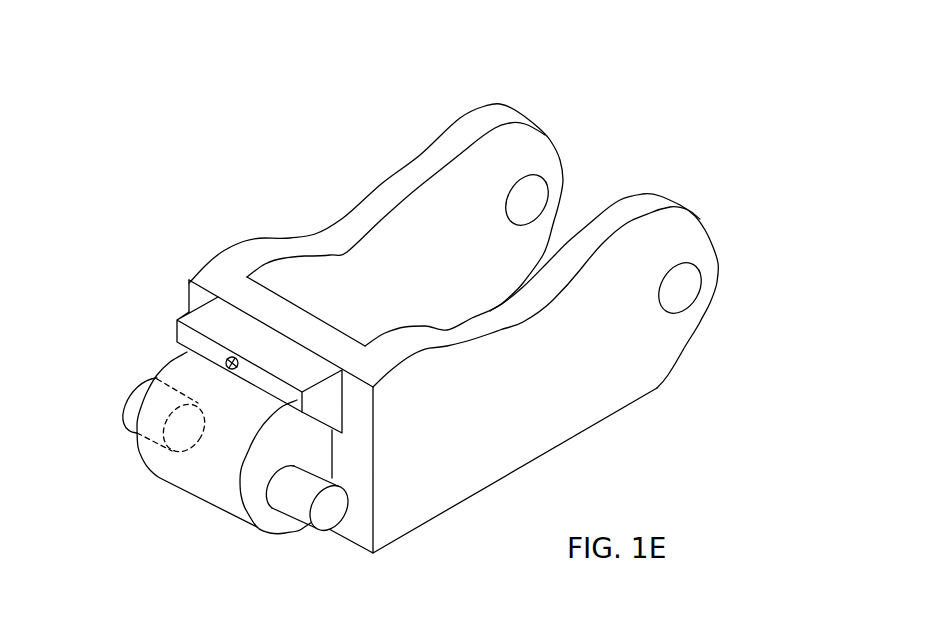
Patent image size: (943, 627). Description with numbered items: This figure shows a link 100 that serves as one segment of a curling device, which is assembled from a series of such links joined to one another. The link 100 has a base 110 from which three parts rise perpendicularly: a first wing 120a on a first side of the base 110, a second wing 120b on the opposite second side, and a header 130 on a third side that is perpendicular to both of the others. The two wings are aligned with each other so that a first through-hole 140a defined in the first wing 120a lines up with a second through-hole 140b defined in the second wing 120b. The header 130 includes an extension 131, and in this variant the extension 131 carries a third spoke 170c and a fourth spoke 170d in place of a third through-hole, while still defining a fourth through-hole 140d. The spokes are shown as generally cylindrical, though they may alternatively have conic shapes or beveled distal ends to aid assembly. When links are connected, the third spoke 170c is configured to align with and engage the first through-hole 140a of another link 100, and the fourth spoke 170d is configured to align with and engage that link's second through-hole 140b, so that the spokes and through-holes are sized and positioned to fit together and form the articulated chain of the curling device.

The link 100 is at (682, 90).
The base 110 is at (560, 446).
The first wing 120a is at (613, 360).
The second wing 120b is at (343, 218).
The header 130 is at (366, 521).
The extension 131 is at (207, 472).
The first through-hole 140a is at (683, 288).
The second through-hole 140b is at (535, 192).
The fourth through-hole 140d is at (226, 363).
The third spoke 170c is at (296, 507).
The fourth spoke 170d is at (126, 407).